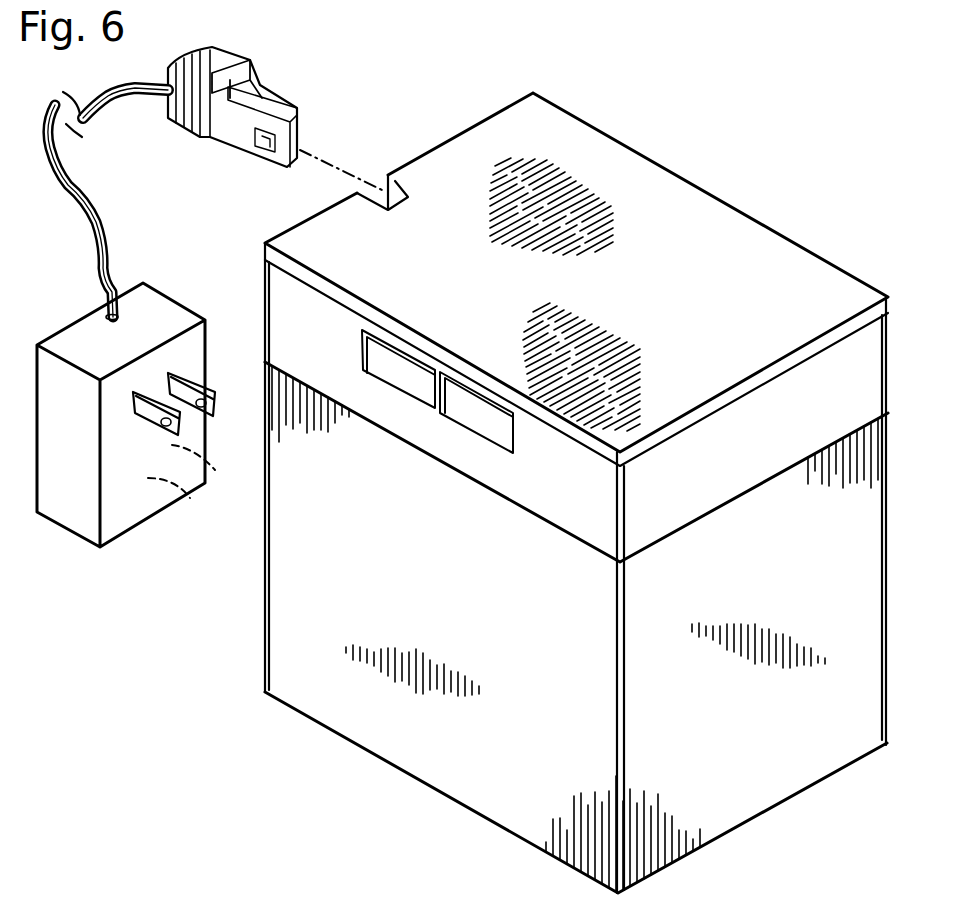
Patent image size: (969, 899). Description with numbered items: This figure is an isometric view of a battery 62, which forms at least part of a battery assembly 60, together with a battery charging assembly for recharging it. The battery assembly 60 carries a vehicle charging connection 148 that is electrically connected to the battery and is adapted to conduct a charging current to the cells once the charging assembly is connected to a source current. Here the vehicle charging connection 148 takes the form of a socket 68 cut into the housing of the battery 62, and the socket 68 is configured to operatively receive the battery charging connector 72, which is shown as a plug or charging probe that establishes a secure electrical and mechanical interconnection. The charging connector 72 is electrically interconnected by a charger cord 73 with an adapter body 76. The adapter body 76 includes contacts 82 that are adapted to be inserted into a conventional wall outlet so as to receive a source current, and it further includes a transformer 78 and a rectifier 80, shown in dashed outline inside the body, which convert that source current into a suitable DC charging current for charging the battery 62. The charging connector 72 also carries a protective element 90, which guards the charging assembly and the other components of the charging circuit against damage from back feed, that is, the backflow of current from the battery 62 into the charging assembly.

The battery assembly 60 is at (540, 493).
The battery 62 is at (265, 641).
The socket 68 is at (380, 177).
The battery charging connector 72 is at (242, 88).
The charger cord 73 is at (142, 103).
The adapter body 76 is at (148, 442).
The transformer 78 is at (190, 498).
The rectifier 80 is at (216, 470).
The contacts 82 is at (185, 378).
The protective element 90 is at (257, 78).
The vehicle charging connection 148 is at (348, 186).